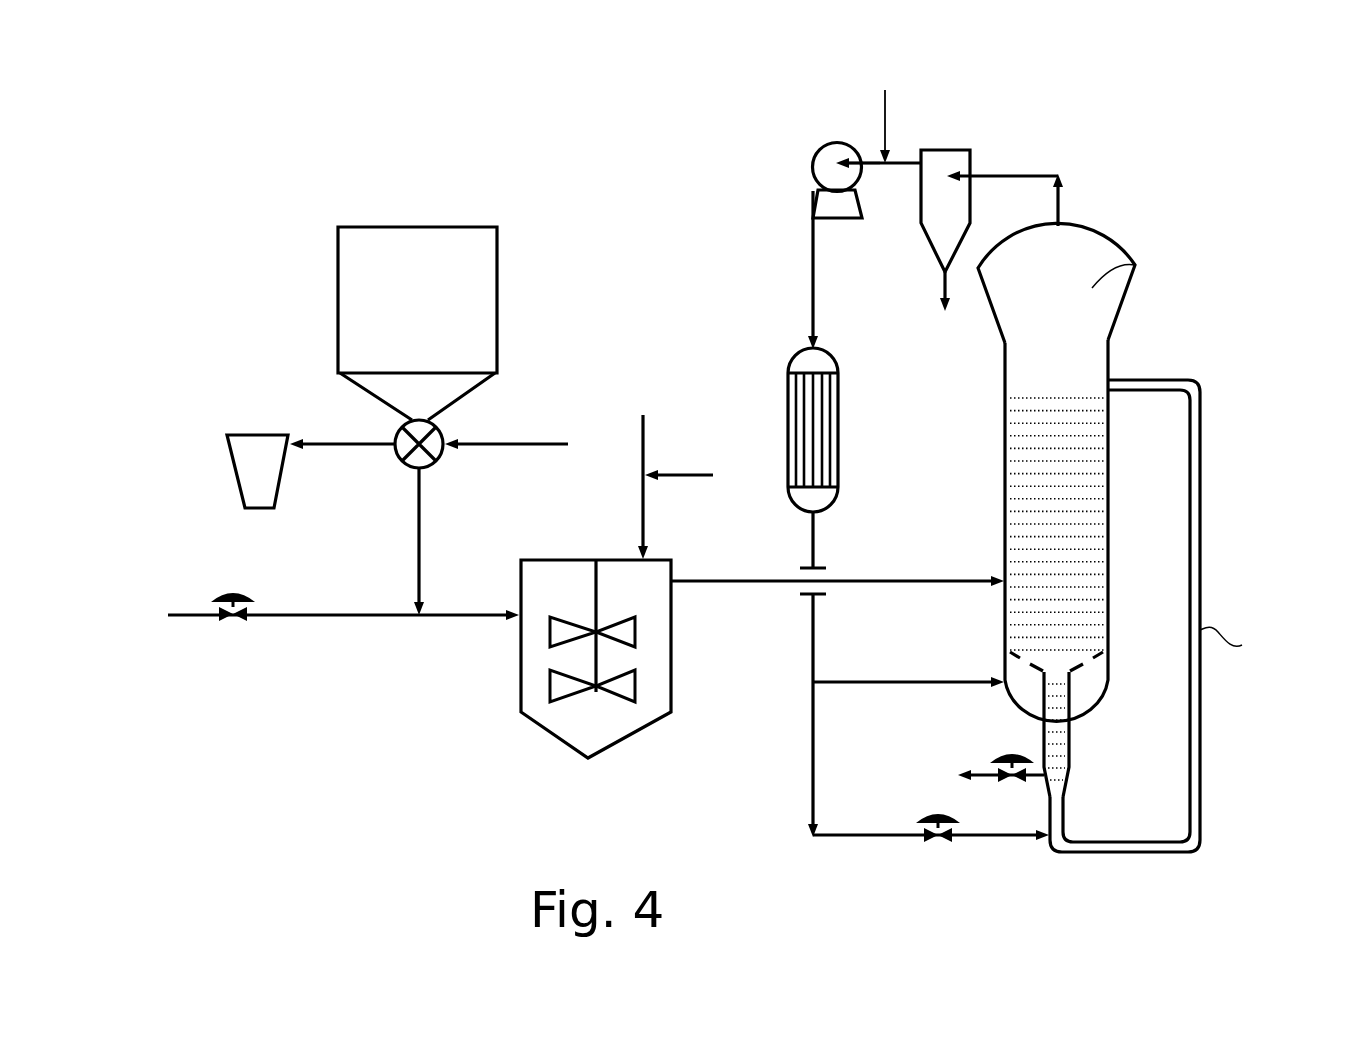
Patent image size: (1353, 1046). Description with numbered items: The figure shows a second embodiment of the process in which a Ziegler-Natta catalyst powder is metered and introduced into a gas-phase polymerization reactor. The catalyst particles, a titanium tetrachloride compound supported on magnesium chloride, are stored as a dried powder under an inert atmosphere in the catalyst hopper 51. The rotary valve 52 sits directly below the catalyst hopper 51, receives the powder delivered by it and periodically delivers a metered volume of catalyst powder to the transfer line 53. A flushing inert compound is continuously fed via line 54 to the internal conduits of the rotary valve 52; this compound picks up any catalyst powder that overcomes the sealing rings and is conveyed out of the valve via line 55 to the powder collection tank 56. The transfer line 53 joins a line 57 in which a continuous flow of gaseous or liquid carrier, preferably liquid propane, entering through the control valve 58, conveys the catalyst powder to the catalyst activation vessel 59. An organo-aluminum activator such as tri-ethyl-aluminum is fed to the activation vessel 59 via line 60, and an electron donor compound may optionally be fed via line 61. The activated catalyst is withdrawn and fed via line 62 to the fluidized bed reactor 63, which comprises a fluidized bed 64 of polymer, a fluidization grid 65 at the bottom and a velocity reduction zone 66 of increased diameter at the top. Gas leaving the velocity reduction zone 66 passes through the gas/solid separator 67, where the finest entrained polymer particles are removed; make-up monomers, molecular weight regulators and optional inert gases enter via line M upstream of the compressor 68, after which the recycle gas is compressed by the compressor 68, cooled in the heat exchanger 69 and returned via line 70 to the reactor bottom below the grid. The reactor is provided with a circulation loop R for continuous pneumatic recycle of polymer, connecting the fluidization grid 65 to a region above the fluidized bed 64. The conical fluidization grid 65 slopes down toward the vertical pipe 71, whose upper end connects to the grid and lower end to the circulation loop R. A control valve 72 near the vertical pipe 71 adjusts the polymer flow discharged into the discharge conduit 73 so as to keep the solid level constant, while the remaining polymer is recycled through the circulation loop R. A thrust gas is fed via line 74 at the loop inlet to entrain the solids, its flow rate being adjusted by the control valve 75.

The catalyst hopper 51 is at (338, 288).
The rotary valve 52 is at (404, 462).
The transfer line 53 is at (422, 537).
The line 54 is at (545, 445).
The line 55 is at (310, 444).
The powder collection tank 56 is at (230, 458).
The line 57 is at (450, 617).
The control valve 58 is at (238, 622).
The catalyst activation vessel 59 is at (535, 720).
The line 60 is at (648, 420).
The line 61 is at (700, 477).
The line 62 is at (885, 580).
The fluidized bed reactor 63 is at (1044, 300).
The fluidized bed 64 is at (1053, 510).
The fluidization grid 65 is at (1104, 657).
The velocity reduction zone 66 is at (1135, 265).
The gas/solid separator 67 is at (945, 150).
The compressor 68 is at (838, 144).
The heat exchanger 69 is at (788, 392).
The line 70 is at (907, 682).
The vertical pipe 71 is at (1070, 750).
The control valve 72 is at (1013, 776).
The discharge conduit 73 is at (968, 772).
The line 74 is at (862, 837).
The control valve 75 is at (940, 838).
The line M is at (900, 110).
The circulation loop R is at (1160, 616).